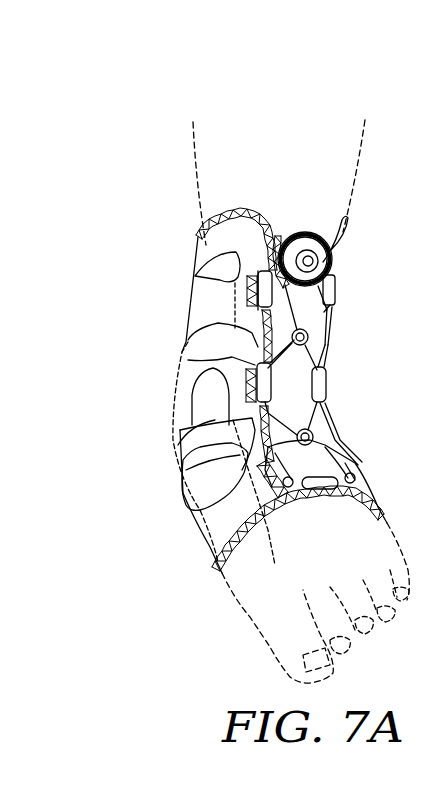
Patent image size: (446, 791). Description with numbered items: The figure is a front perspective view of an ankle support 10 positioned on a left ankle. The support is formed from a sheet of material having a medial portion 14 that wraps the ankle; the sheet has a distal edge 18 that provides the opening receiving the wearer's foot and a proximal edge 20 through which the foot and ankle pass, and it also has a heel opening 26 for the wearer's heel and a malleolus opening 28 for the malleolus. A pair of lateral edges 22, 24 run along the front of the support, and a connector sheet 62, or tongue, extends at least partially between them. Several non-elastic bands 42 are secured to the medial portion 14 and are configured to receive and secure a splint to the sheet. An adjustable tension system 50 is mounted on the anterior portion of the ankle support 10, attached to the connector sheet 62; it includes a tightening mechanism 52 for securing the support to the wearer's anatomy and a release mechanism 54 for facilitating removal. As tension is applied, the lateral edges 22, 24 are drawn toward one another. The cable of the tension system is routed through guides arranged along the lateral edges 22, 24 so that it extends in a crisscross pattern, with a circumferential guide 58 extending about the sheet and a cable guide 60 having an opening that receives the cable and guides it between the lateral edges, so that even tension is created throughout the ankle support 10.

The ankle support 10 is at (145, 110).
The medial portion 14 is at (238, 370).
The distal edge 18 is at (248, 545).
The proximal edge 20 is at (273, 268).
The lateral edge 22 is at (247, 282).
The lateral edge 24 is at (328, 340).
The heel opening 26 is at (178, 398).
The malleolus opening 28 is at (213, 400).
The non-elastic band 42 is at (198, 300).
The adjustable tension system 50 is at (332, 270).
The tightening mechanism 52 is at (337, 279).
The release mechanism 54 is at (312, 258).
The circumferential guide 58 is at (327, 380).
The cable guide 60 is at (313, 436).
The connector sheet 62 is at (296, 312).